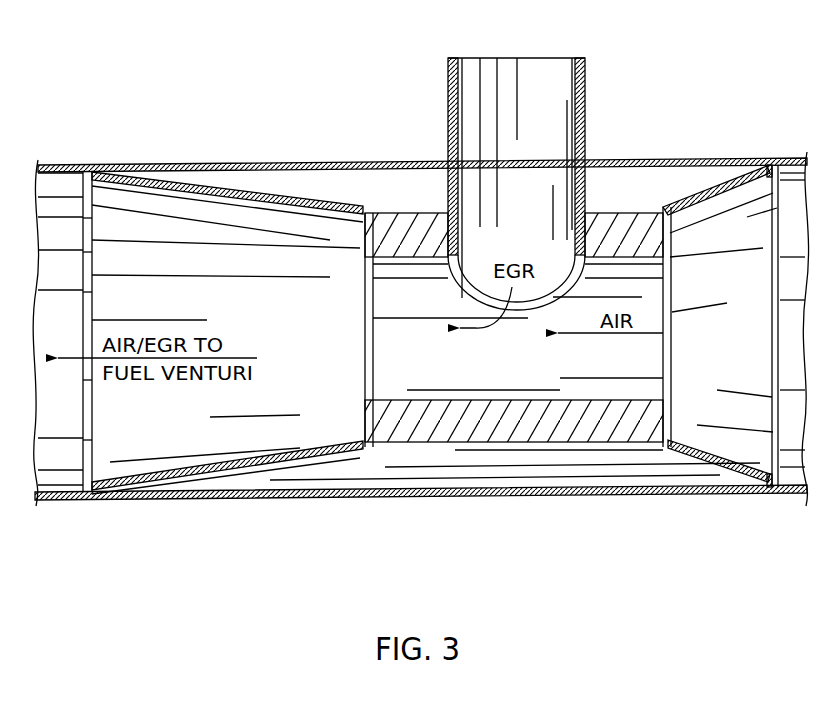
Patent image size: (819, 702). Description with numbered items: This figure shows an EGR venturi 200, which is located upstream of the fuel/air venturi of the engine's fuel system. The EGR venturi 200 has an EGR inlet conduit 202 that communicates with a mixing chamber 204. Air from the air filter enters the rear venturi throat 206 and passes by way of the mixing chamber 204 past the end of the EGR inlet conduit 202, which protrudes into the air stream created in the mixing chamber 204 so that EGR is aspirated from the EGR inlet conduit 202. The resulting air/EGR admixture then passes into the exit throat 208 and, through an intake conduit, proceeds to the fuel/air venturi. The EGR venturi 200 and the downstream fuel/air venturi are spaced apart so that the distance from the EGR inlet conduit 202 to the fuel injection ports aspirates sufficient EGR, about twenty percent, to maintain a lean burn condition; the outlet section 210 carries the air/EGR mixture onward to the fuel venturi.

The EGR venturi 200 is at (362, 55).
The EGR inlet conduit 202 is at (587, 92).
The mixing chamber 204 is at (548, 373).
The rear venturi throat 206 is at (777, 187).
The exit throat 208 is at (253, 198).
The outlet pipe to fuel venturi 210 is at (57, 190).